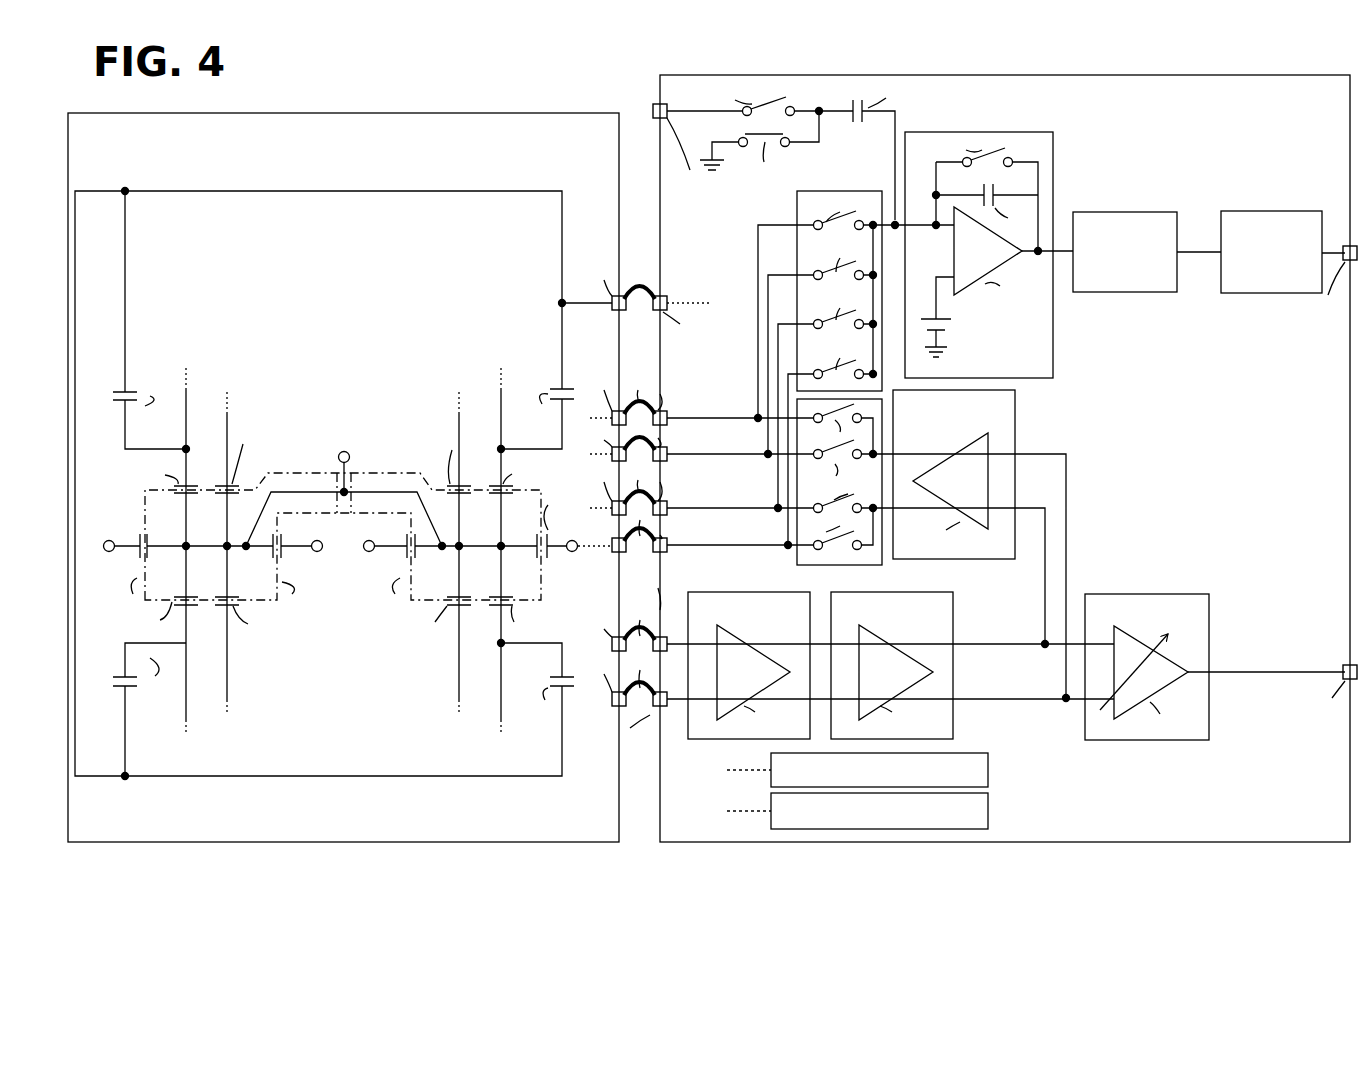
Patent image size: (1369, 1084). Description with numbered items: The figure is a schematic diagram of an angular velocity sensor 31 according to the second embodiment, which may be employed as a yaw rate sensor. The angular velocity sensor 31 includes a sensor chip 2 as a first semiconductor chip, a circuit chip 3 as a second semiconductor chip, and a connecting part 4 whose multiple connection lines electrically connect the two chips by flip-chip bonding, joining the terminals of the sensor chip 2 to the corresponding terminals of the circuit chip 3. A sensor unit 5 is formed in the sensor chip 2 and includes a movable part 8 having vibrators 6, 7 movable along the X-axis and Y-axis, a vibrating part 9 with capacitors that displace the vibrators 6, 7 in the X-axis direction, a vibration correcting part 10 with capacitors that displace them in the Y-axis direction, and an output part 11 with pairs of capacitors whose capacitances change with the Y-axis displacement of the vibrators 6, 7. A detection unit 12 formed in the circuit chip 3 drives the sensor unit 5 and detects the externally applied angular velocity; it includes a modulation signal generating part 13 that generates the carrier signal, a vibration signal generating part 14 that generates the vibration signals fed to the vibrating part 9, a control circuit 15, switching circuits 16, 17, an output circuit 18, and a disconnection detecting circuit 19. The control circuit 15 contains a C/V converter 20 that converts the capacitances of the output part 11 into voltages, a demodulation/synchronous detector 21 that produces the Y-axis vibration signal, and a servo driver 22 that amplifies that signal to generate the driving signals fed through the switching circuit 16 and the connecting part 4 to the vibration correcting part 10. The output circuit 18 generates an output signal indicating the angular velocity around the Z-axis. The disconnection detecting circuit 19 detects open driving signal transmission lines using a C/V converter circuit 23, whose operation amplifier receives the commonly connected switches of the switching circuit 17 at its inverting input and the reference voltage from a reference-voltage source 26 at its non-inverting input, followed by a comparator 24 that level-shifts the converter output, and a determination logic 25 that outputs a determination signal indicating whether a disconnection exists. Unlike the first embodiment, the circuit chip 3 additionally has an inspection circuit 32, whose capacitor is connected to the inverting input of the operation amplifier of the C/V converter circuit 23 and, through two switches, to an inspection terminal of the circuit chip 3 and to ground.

The sensor chip 2 is at (357, 113).
The circuit chip 3 is at (1015, 76).
The connecting part 4 is at (643, 190).
The sensor unit 5 is at (347, 708).
The vibrator 6 is at (300, 465).
The vibrator 7 is at (386, 465).
The movable part 8 is at (341, 385).
The vibrating part 9 is at (122, 562).
The vibration correcting part 10 is at (186, 330).
The output part 11 is at (229, 352).
The detection unit 12 is at (1224, 415).
The modulation signal generating part 13 is at (988, 770).
The vibration signal generating part 14 is at (988, 811).
The control circuit 15 is at (1012, 654).
The switching circuit 16 is at (830, 568).
The switching circuit 17 is at (843, 191).
The output circuit 18 is at (1150, 594).
The disconnection detecting circuit 19 is at (1215, 237).
The C/V converter 20 is at (752, 594).
The demodulation/synchronous detector 21 is at (905, 592).
The servo driver 22 is at (1015, 430).
The C/V converter circuit 23 is at (990, 255).
The comparator 24 is at (1123, 293).
The determination logic 25 is at (1272, 294).
The reference-voltage source 26 is at (955, 321).
The angular velocity sensor 31 is at (642, 72).
The inspection circuit 32 is at (735, 207).